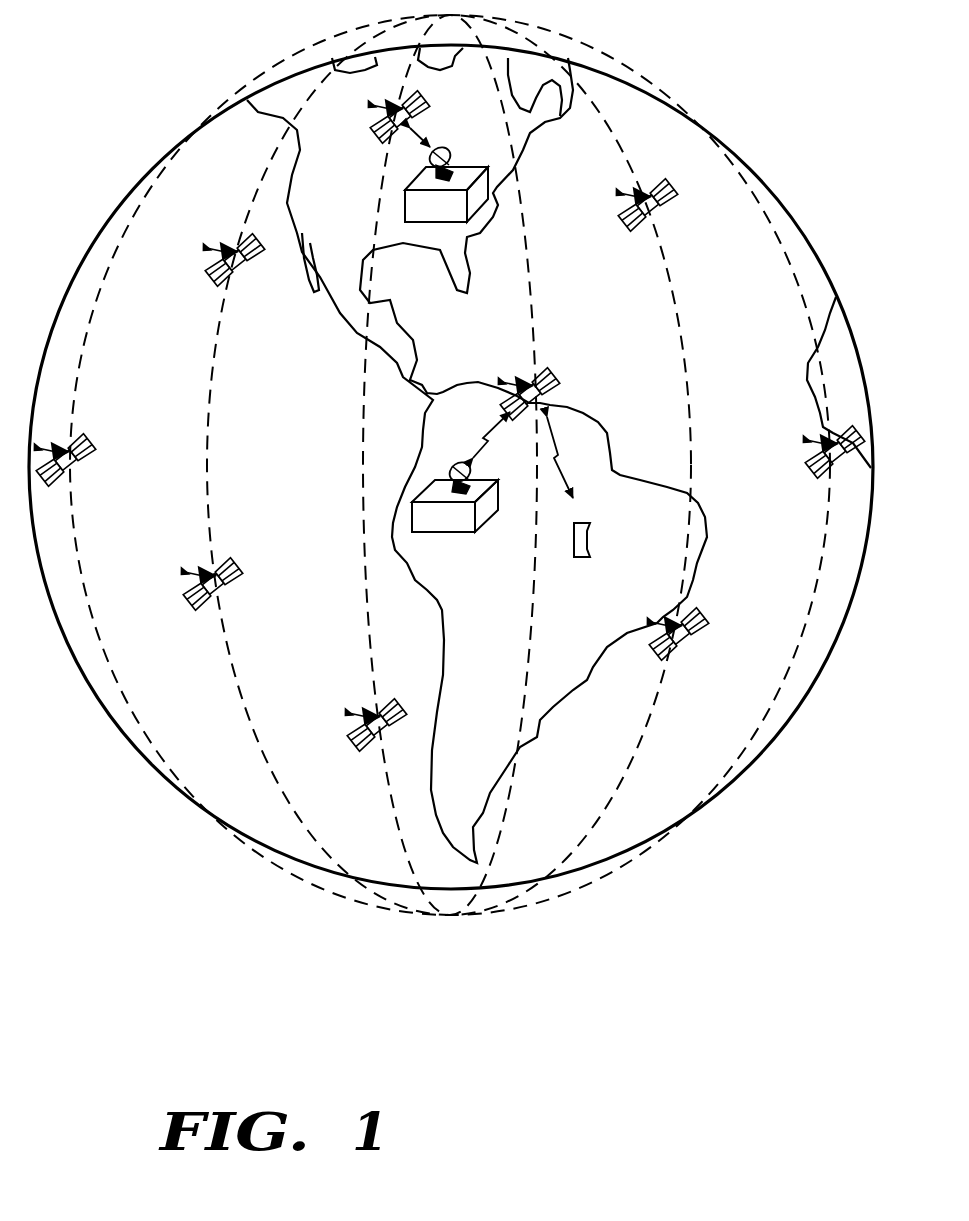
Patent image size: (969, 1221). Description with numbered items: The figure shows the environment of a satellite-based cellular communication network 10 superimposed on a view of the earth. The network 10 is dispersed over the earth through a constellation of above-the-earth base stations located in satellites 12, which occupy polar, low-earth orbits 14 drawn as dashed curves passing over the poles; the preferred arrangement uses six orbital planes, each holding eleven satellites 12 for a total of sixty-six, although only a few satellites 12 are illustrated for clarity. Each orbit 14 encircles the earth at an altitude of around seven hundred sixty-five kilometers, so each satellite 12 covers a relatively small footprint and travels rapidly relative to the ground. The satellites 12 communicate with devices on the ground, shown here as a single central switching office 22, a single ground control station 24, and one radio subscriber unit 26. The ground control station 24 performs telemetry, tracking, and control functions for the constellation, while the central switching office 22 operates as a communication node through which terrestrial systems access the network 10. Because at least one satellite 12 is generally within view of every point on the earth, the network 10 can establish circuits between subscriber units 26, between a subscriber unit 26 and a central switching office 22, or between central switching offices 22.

The satellite-based cellular communication network 10 is at (443, 1012).
The satellites 12 is at (377, 134).
The polar low-earth orbits 14 is at (259, 190).
The central switching office 22 is at (453, 533).
The ground control station 24 is at (471, 168).
The radio subscriber unit 26 is at (580, 558).